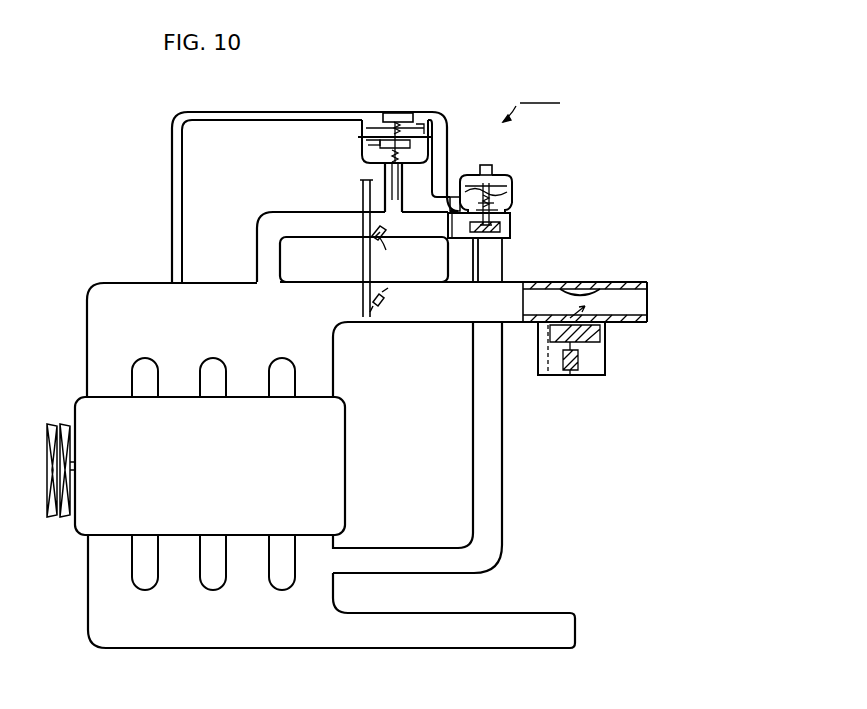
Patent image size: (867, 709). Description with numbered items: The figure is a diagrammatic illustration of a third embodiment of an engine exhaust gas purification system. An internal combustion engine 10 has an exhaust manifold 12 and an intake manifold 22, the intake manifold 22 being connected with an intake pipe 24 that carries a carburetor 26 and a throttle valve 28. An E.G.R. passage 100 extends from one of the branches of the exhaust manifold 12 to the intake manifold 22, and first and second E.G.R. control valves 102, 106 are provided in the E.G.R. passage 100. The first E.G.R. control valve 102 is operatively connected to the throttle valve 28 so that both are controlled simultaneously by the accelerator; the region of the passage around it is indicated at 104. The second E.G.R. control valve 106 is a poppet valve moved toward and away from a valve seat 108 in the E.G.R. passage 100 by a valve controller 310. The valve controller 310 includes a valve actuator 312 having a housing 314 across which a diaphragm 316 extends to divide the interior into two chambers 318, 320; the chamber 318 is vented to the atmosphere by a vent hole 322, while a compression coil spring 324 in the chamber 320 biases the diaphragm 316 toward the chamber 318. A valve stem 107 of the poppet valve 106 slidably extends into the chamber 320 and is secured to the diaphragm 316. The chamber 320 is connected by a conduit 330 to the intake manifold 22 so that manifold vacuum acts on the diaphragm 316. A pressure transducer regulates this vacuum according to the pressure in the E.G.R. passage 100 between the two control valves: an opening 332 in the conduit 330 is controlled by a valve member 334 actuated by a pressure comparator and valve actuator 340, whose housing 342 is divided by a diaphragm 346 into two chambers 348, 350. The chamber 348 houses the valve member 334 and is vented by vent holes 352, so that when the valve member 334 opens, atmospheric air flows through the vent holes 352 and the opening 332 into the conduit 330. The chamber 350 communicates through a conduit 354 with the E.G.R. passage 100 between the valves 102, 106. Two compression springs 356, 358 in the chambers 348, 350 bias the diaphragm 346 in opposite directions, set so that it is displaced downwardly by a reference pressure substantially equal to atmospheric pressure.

The internal combustion engine 10 is at (74, 410).
The exhaust manifold 12 is at (188, 632).
The intake manifold 22 is at (147, 287).
The intake pipe 24 is at (437, 318).
The carburetor 26 is at (605, 338).
The throttle valve 28 is at (378, 306).
The E.G.R. passage 100 is at (258, 226).
The first E.G.R. control valve 102 is at (391, 252).
The valve chamber 104 is at (363, 262).
The second E.G.R. control valve 106 is at (507, 238).
The valve stem 107 is at (505, 238).
The valve seat 108 is at (474, 238).
The valve controller 310 is at (532, 100).
The valve actuator 312 is at (527, 173).
The housing 314 is at (512, 184).
The diaphragm 316 is at (513, 196).
The chamber 318 is at (472, 180).
The chamber 320 is at (512, 216).
The vent hole 322 is at (488, 166).
The compression coil spring 324 is at (513, 204).
The conduit 330 is at (172, 146).
The opening 332 is at (403, 112).
The valve member 334 is at (392, 112).
The pressure comparator and valve actuator 340 is at (364, 148).
The housing 342 is at (364, 156).
The diaphragm 346 is at (370, 122).
The chamber 348 is at (376, 120).
The chamber 350 is at (366, 158).
The vent holes 352 is at (355, 137).
The conduit 354 is at (363, 200).
The compression spring 356 is at (432, 122).
The compression spring 358 is at (376, 172).